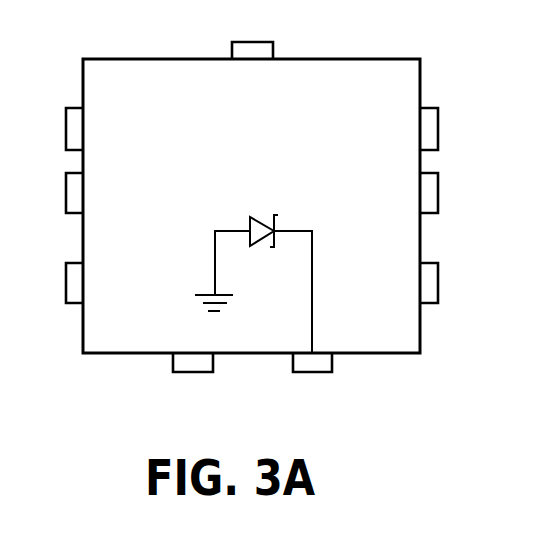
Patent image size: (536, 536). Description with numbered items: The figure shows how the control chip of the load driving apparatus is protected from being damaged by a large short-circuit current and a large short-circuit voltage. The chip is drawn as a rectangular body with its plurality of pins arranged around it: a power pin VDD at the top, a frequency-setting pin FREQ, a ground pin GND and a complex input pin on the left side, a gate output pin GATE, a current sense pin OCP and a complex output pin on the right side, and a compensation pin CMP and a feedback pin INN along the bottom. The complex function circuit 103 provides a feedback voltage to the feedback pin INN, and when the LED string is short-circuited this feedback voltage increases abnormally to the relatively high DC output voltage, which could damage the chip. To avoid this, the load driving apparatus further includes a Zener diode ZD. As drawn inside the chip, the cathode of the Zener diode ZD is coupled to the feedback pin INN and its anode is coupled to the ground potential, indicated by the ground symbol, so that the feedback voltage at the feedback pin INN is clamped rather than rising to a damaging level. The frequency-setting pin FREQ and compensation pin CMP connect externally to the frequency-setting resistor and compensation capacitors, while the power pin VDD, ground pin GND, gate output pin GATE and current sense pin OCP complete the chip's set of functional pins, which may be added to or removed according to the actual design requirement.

The LED driver integrated circuit chip 103 is at (362, 58).
The Zener diode ZD is at (253, 262).
The power pin VDD is at (253, 76).
The frequency-setting pin FREQ is at (113, 130).
The gate output pin GATE is at (391, 130).
The ground pin GND is at (105, 194).
The current sense pin OCP is at (400, 194).
The compensation pin CMP is at (184, 341).
The feedback pin INN is at (328, 340).